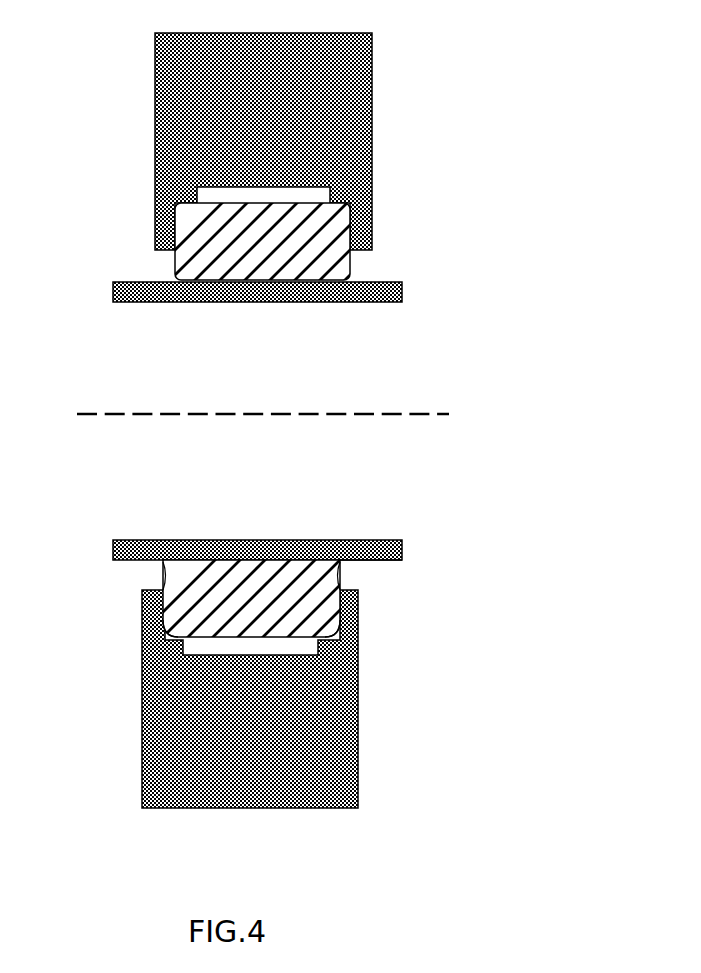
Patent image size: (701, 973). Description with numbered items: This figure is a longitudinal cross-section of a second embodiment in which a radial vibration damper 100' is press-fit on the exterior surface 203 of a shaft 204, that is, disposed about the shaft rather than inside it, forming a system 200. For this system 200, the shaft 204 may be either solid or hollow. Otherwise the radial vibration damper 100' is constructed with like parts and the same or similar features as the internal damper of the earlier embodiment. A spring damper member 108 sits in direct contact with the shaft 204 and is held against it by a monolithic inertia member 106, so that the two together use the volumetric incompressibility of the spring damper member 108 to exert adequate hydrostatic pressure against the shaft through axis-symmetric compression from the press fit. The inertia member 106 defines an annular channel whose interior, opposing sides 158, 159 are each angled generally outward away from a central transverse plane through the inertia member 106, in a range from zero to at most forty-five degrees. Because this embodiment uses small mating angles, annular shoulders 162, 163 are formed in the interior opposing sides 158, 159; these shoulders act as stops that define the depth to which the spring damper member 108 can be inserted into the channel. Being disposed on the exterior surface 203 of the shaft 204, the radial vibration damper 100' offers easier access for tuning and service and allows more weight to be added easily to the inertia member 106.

The shaft 204 is at (157, 537).
The exterior surface of the shaft 203 is at (380, 567).
The spring damper member 108 is at (300, 570).
The interior opposing side of the annular channel 158 is at (163, 595).
The interior opposing side of the annular channel 159 is at (337, 597).
The annular shoulder 162 is at (177, 627).
The annular shoulder 163 is at (333, 627).
The inertia member 106 is at (143, 762).
The radial vibration damper 100' is at (251, 650).
The system 200 is at (323, 644).